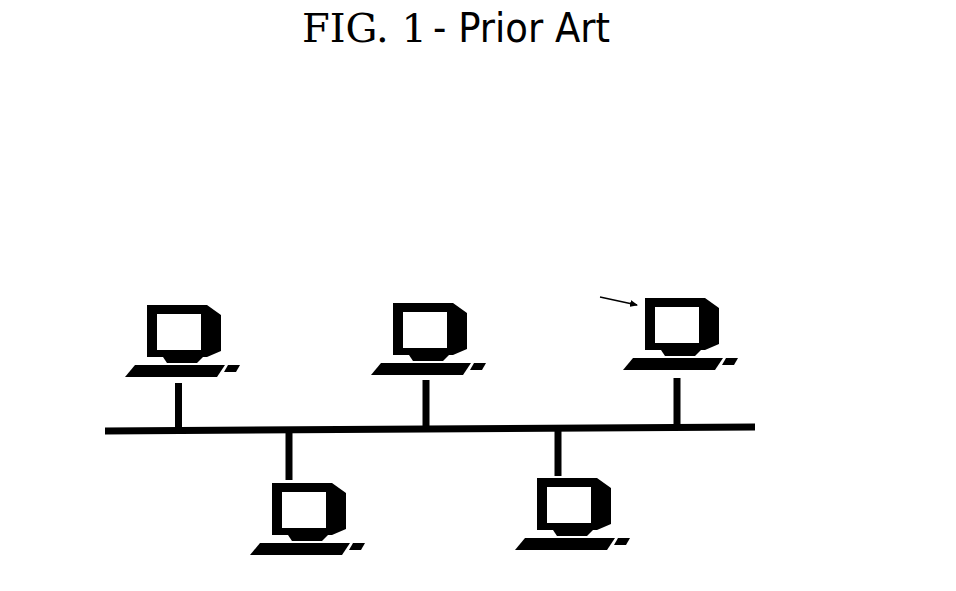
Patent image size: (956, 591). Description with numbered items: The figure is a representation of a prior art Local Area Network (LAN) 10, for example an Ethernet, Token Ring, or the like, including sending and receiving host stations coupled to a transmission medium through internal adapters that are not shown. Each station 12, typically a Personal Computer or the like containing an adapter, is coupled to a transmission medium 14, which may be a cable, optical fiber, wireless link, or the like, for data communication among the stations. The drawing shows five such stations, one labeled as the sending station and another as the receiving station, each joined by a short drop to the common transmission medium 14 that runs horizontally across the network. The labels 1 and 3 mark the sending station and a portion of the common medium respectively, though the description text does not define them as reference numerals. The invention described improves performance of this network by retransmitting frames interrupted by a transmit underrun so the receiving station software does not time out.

The sending station 1 is at (226, 327).
The network bus segment 3 is at (430, 431).
The Local Area Network (LAN) 10 is at (454, 409).
The station 12 is at (426, 409).
The transmission medium 14 is at (478, 434).